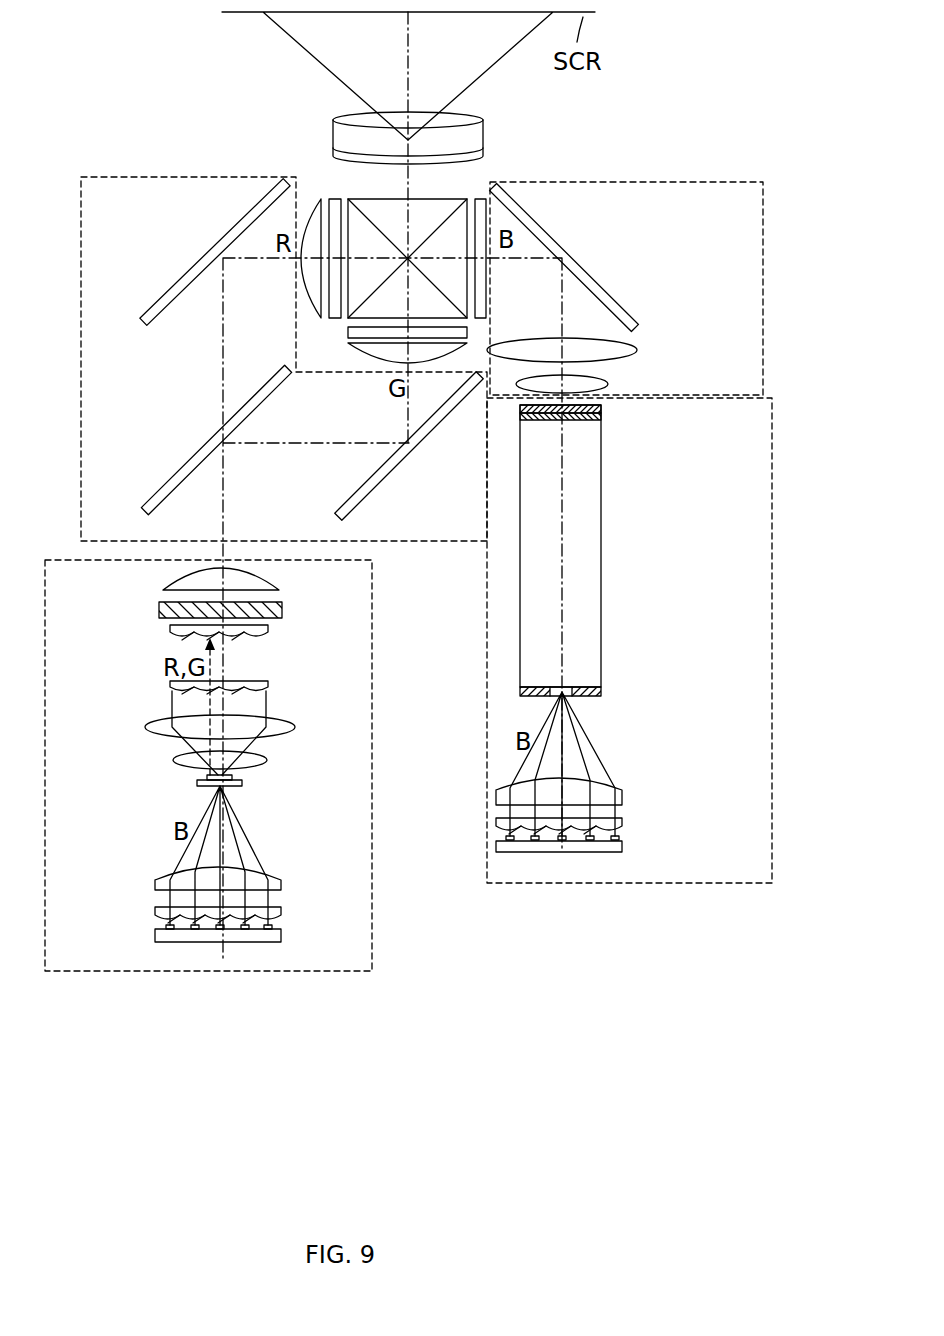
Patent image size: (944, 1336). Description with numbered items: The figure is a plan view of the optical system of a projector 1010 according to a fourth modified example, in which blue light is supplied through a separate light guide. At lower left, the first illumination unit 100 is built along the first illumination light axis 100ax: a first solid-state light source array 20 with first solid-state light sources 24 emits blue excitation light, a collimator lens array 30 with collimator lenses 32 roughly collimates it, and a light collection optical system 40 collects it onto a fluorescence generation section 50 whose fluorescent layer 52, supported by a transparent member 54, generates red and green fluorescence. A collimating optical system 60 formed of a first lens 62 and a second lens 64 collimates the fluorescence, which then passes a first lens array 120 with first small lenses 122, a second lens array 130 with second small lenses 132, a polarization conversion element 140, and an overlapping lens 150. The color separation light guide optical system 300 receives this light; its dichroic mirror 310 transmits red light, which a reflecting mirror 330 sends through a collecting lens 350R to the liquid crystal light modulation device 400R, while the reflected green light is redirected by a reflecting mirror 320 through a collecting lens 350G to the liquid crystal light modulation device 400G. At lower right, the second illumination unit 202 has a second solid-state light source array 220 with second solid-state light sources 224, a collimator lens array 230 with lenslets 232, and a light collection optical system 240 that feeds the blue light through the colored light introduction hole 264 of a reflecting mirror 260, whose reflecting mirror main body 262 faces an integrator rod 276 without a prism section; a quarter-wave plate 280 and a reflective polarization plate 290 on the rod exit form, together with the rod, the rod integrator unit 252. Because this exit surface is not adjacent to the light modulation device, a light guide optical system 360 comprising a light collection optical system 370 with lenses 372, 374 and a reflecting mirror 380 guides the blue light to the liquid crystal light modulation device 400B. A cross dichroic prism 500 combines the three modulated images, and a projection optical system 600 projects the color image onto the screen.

The projector 1010 is at (782, 30).
The projection optical system 600 is at (333, 135).
The cross dichroic prism 500 is at (447, 199).
The liquid crystal light modulation device for red light 400R is at (335, 199).
The liquid crystal light modulation device for green light 400G is at (347, 333).
The liquid crystal light modulation device for blue light 400B is at (482, 199).
The collecting lens 350R is at (318, 199).
The collecting lens 350G is at (347, 347).
The color separation light guide optical system 300 is at (81, 392).
The dichroic mirror 310 is at (178, 470).
The reflecting mirror 320 is at (380, 485).
The reflecting mirror 330 is at (163, 298).
The light guide optical system 360 is at (722, 180).
The reflecting mirror 380 is at (603, 285).
The light collection optical system 370 is at (631, 362).
The lens 374 is at (637, 351).
The lens 372 is at (607, 385).
The second illumination unit 202 is at (662, 885).
The rod integrator unit 252 is at (645, 543).
The integrator rod 276 is at (601, 507).
The reflective polarization plate 290 is at (601, 409).
The λ/4 plate 280 is at (616, 431).
The reflecting mirror 260 is at (617, 701).
The reflecting mirror main body 262 is at (601, 690).
The colored light introduction hole 264 is at (570, 697).
The light collection optical system 240 is at (622, 800).
The collimator lens array 230 is at (626, 822).
The lenslet 232 is at (628, 831).
The second solid-state light source 224 is at (622, 838).
The second solid-state light source array 220 is at (627, 843).
The first illumination unit 100 is at (327, 973).
The first illumination light axis 100ax is at (222, 550).
The overlapping lens 150 is at (279, 585).
The polarization conversion element 140 is at (283, 609).
The second lens array 130 is at (268, 630).
The second small lens 132 is at (170, 633).
The first lens array 120 is at (268, 685).
The first small lens 122 is at (170, 688).
The collimating optical system 60 is at (170, 745).
The second lens 64 is at (148, 727).
The first lens 62 is at (172, 760).
The fluorescence generation section 50 is at (280, 772).
The fluorescent layer 52 is at (232, 776).
The transparent member 54 is at (243, 784).
The light collection optical system 40 is at (281, 889).
The collimator lens array 30 is at (285, 913).
The collimator lens 32 is at (165, 917).
The first solid-state light source 24 is at (165, 930).
The first solid-state light source array 20 is at (285, 936).